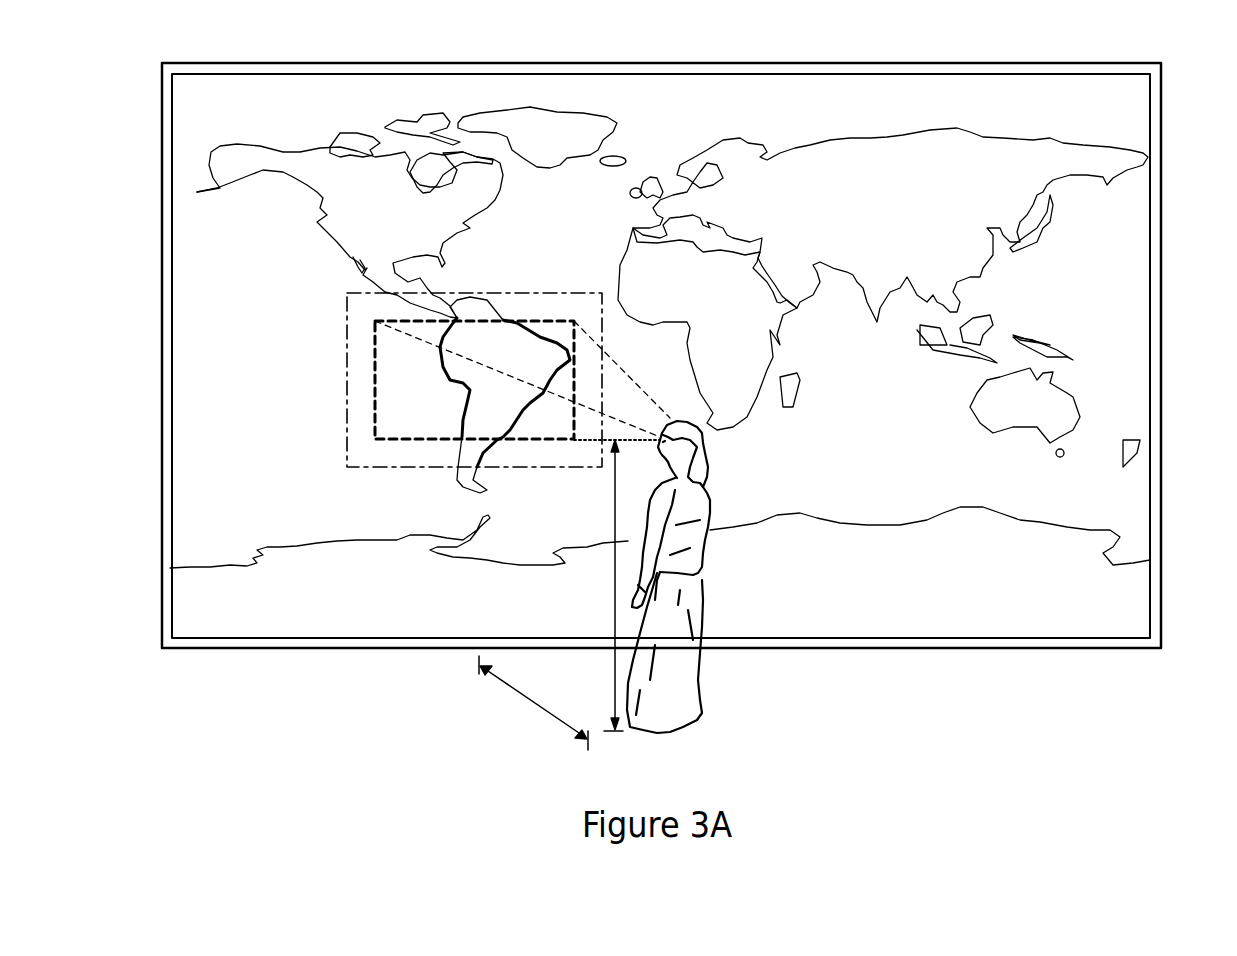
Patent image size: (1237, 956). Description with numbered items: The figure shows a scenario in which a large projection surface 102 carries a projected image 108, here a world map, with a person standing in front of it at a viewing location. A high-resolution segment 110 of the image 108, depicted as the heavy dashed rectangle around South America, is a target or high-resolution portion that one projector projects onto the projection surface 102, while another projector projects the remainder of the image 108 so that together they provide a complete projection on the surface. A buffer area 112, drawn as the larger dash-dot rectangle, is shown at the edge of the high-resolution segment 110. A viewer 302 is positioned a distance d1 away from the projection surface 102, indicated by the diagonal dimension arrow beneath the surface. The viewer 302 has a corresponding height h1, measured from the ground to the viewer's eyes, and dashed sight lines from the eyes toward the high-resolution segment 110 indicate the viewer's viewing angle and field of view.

The large projection surface 102 is at (1162, 118).
The image 108 is at (1122, 290).
The high-resolution segment 110 is at (375, 350).
The buffer area 112 is at (528, 297).
The viewer 302 is at (682, 705).
The height of the viewer h1 is at (614, 578).
The distance d1 is at (532, 707).